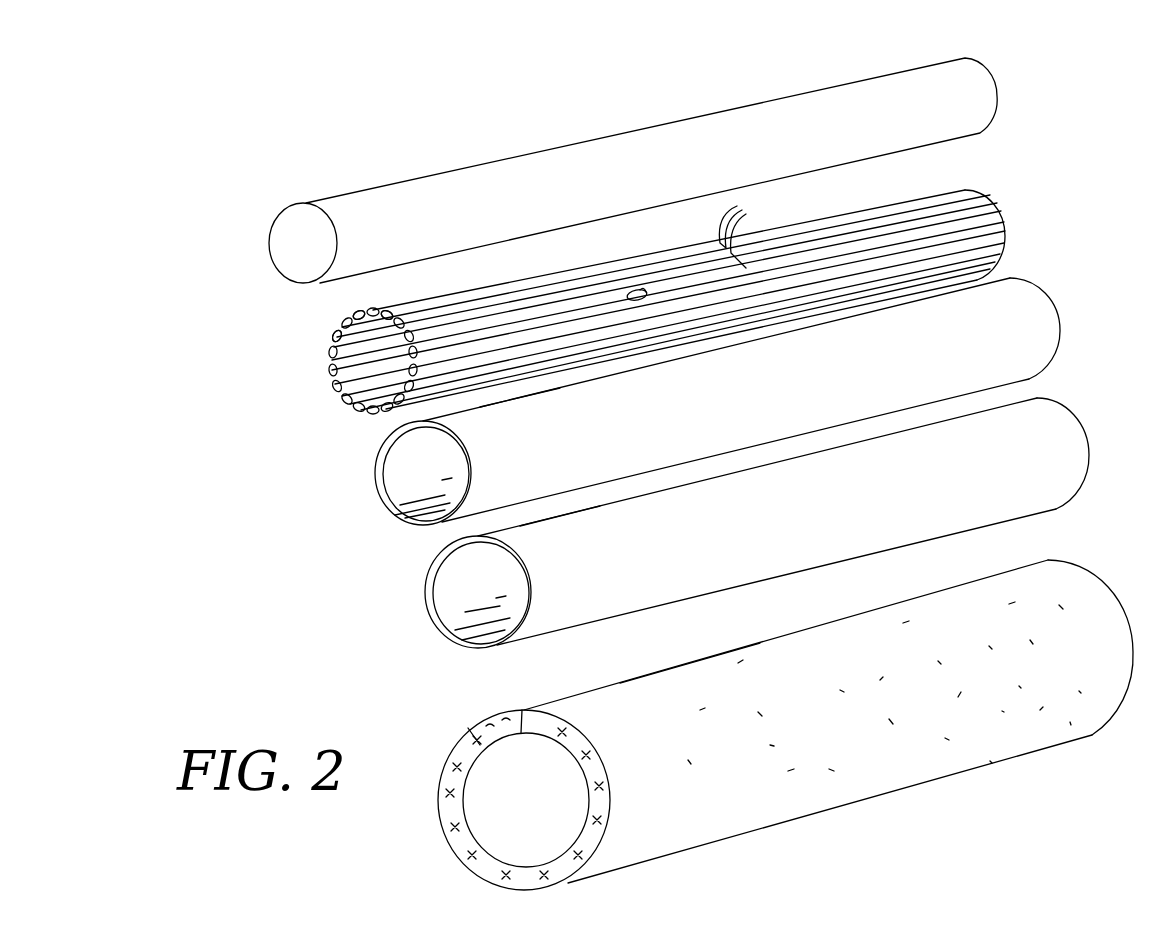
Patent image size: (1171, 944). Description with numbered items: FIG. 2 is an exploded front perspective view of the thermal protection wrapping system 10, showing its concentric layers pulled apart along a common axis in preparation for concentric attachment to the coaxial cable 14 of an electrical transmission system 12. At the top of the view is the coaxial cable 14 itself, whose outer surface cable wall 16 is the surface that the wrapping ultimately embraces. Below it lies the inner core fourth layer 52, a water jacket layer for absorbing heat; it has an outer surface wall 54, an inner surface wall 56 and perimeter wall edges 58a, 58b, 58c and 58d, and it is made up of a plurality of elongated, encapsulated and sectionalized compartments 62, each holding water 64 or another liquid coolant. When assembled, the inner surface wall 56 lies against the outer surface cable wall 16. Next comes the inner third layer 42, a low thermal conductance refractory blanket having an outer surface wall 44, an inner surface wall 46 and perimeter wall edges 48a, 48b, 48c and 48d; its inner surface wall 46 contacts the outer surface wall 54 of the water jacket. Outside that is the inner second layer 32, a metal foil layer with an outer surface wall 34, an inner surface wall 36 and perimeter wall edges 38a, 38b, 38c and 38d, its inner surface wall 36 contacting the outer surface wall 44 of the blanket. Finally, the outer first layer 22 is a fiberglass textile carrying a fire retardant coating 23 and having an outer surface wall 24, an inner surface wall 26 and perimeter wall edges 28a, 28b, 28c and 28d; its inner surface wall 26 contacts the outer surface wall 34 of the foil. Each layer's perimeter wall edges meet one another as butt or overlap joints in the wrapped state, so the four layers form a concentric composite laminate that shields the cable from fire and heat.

The thermal protection wrapping system 10 is at (406, 154).
The electrical transmission system 12 is at (630, 157).
The coaxial cable 14 is at (605, 164).
The outer surface cable wall 16 is at (787, 132).
The outer first layer 22 is at (769, 715).
The fire retardant coating 23 is at (560, 724).
The outer surface wall 24 is at (748, 692).
The inner surface wall 26 is at (515, 783).
The perimeter wall edge 28a is at (530, 873).
The perimeter wall edge 28b is at (452, 768).
The perimeter wall edge 28c is at (1094, 575).
The perimeter wall edge 28d is at (682, 652).
The inner second layer 32 is at (762, 508).
The outer surface wall 34 is at (687, 527).
The inner surface wall 36 is at (437, 619).
The perimeter wall edge 38a is at (482, 600).
The perimeter wall edge 38b is at (450, 538).
The perimeter wall edge 38c is at (1048, 400).
The perimeter wall edge 38d is at (542, 521).
The inner third layer 42 is at (726, 386).
The outer surface wall 44 is at (641, 412).
The inner surface wall 46 is at (433, 457).
The perimeter wall edge 48a is at (398, 476).
The perimeter wall edge 48b is at (400, 423).
The perimeter wall edge 48c is at (1030, 284).
The perimeter wall edge 48d is at (503, 403).
The inner core fourth layer 52 is at (676, 285).
The outer surface wall 54 is at (668, 289).
The inner surface wall 56 is at (343, 361).
The perimeter wall edge 58a is at (386, 313).
The perimeter wall edge 58b is at (352, 345).
The perimeter wall edge 58c is at (990, 198).
The perimeter wall edge 58d is at (357, 318).
The compartments 62 is at (742, 231).
The water 64 is at (643, 288).